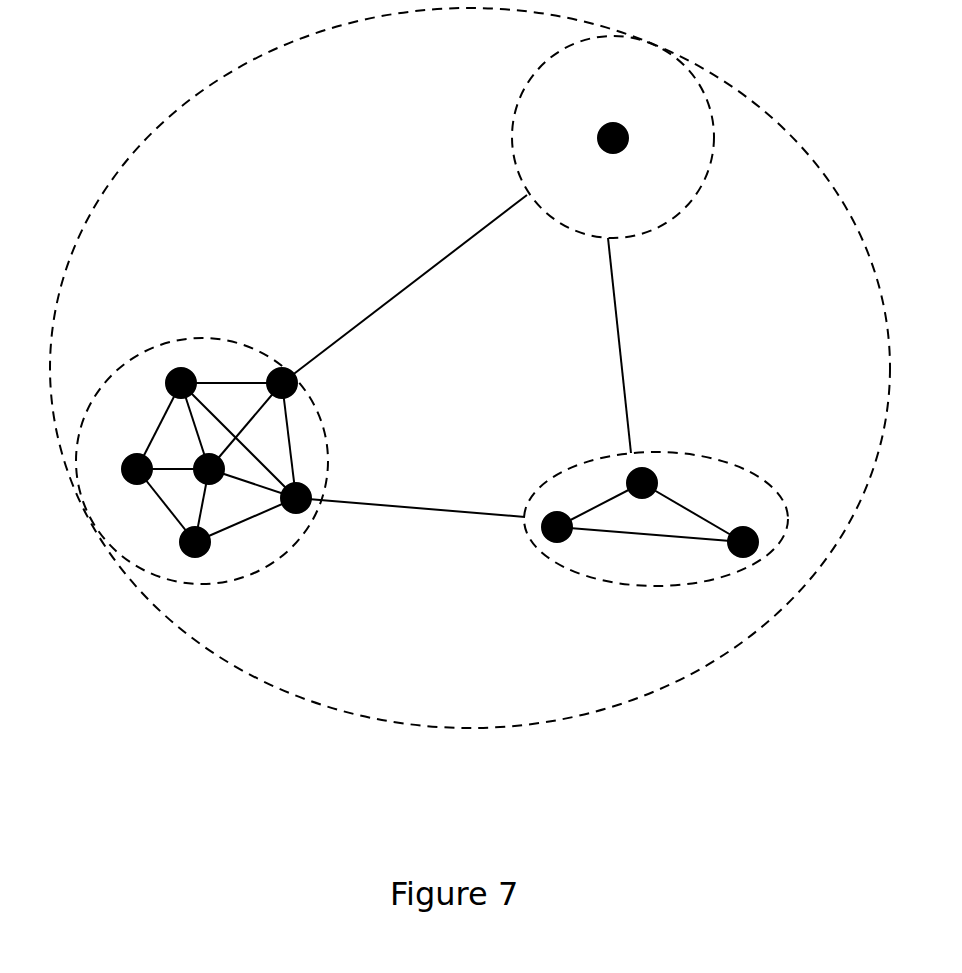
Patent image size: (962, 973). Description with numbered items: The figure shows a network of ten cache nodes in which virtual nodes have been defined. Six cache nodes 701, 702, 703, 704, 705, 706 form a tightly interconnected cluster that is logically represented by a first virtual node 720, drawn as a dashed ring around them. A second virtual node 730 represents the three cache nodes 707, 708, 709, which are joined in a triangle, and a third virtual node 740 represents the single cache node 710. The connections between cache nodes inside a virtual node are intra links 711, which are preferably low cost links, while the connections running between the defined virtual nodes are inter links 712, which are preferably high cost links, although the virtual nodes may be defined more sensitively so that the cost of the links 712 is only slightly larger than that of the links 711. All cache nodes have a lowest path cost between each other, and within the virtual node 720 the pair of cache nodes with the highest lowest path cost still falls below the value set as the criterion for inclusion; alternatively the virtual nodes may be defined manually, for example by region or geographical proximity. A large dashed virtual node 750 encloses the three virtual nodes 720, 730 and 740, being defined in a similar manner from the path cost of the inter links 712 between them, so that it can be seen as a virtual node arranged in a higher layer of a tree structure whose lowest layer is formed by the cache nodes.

The cache node 701 is at (130, 480).
The cache node 702 is at (195, 555).
The cache node 703 is at (305, 508).
The cache node 704 is at (295, 374).
The cache node 705 is at (179, 368).
The cache node 706 is at (203, 464).
The cache node 707 is at (545, 537).
The cache node 708 is at (738, 557).
The cache node 709 is at (650, 470).
The cache node 710 is at (598, 136).
The intra link 711 is at (633, 533).
The inter link 712 is at (402, 287).
The virtual node 720 is at (275, 562).
The virtual node 730 is at (757, 472).
The virtual node 740 is at (698, 195).
The virtual node 750 is at (210, 87).